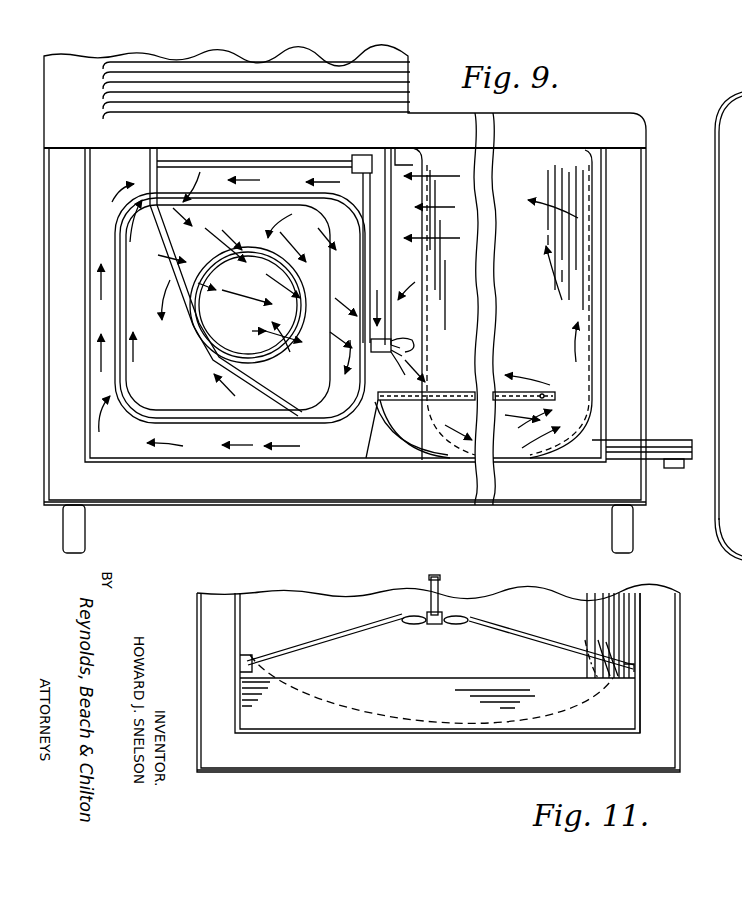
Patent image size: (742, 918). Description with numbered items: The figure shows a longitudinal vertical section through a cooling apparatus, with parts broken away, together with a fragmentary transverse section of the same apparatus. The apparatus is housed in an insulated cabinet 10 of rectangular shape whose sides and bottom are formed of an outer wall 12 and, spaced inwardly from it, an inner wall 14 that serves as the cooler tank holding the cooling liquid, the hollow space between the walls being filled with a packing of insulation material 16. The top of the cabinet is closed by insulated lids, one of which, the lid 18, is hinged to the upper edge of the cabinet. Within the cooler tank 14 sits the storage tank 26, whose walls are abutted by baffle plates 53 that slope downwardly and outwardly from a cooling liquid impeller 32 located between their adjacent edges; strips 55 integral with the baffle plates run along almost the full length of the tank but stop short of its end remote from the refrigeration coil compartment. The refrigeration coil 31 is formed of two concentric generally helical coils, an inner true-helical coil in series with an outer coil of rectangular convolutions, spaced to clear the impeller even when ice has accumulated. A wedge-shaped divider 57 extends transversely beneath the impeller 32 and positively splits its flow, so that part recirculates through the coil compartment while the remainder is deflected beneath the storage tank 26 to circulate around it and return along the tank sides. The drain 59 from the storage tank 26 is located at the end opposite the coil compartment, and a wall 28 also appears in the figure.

In FIG. 9, the insulated cabinet 10 is at (76, 158).
In FIG. 11, the insulated cabinet 10 is at (370, 778).
In FIG. 9, the outer wall 12 is at (334, 506).
In FIG. 11, the outer wall 12 is at (226, 772).
In FIG. 9, the inner wall 14 is at (205, 463).
In FIG. 11, the inner wall 14 is at (293, 733).
In FIG. 9, the insulation material 16 is at (413, 494).
In FIG. 11, the insulation material 16 is at (668, 679).
In FIG. 9, the insulated lid 18 is at (577, 117).
In FIG. 9, the storage tank 26 is at (558, 316).
In FIG. 11, the storage tank 26 is at (331, 617).
In FIG. 9, the chamber wall 28 is at (597, 323).
In FIG. 11, the chamber wall 28 is at (629, 612).
In FIG. 9, the coil 31 is at (161, 420).
In FIG. 9, the impeller 32 is at (398, 348).
In FIG. 11, the impeller 32 is at (448, 627).
In FIG. 11, the baffle plates 53 is at (360, 630).
In FIG. 9, the strips 55 is at (527, 394).
In FIG. 11, the strips 55 is at (248, 659).
In FIG. 9, the wedge-shaped divider 57 is at (366, 448).
In FIG. 11, the wedge-shaped divider 57 is at (421, 711).
In FIG. 9, the drain 59 is at (684, 447).